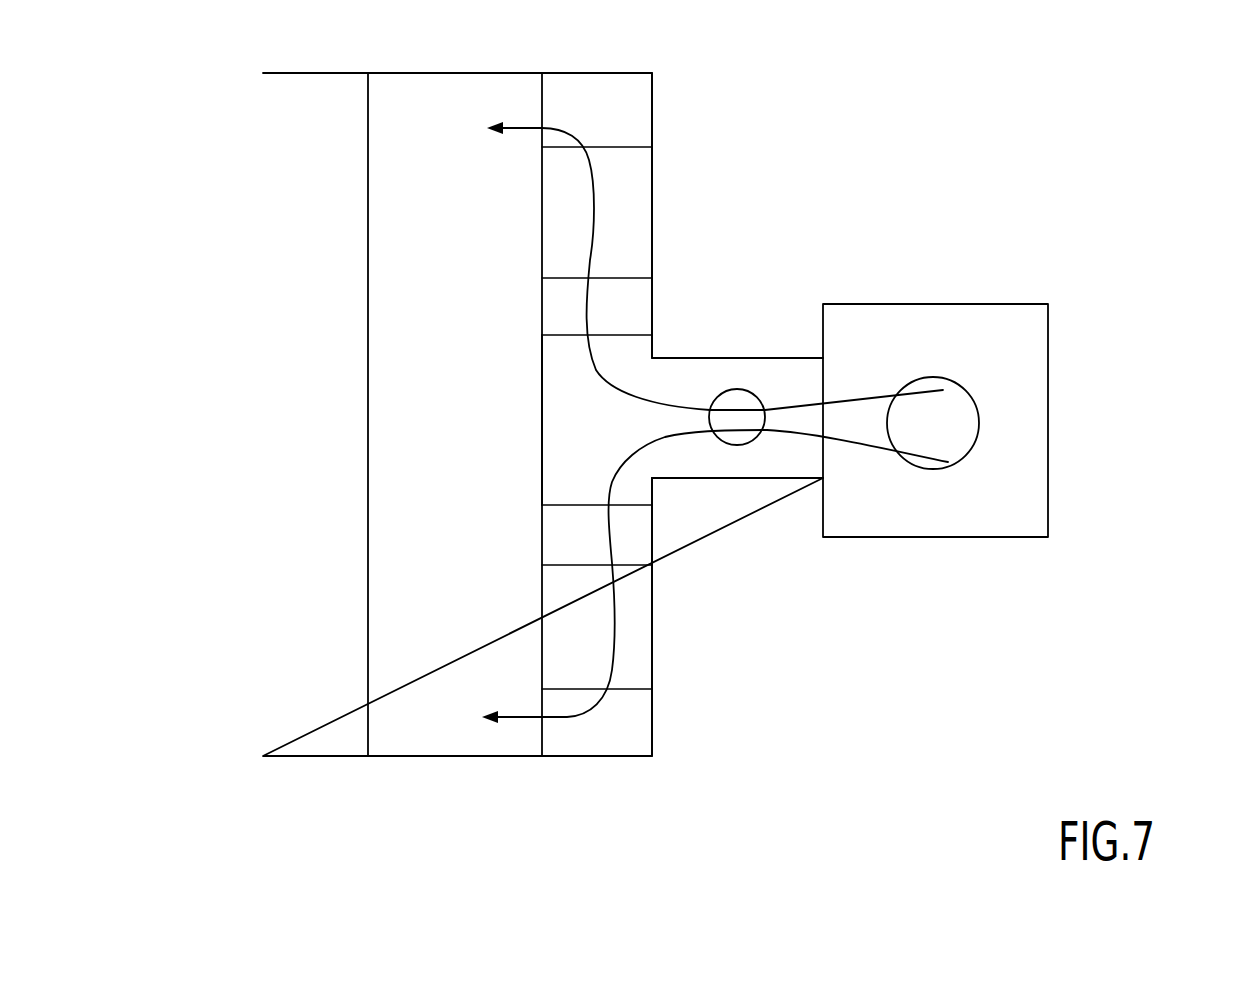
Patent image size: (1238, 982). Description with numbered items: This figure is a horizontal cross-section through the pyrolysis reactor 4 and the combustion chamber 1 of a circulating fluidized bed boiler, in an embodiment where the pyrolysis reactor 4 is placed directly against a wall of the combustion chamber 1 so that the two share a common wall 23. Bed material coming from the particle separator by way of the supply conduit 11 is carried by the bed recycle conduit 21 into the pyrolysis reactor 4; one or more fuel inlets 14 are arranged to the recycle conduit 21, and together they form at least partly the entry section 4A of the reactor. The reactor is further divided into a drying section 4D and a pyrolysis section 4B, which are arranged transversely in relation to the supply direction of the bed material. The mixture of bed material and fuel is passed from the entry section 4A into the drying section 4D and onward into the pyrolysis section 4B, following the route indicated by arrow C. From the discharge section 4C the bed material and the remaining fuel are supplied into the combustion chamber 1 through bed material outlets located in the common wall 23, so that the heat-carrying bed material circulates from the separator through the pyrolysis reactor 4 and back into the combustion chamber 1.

The combustion chamber 1 is at (440, 710).
The common wall 23 is at (537, 357).
The pyrolysis reactor 4 is at (563, 428).
The entry section 4A is at (660, 427).
The pyrolysis section 4B is at (635, 228).
The discharge section 4C is at (637, 97).
The drying section 4D is at (645, 307).
The route of the bed material C is at (638, 142).
The fuel inlet 14 is at (738, 392).
The recycle conduit 21 is at (738, 468).
The supply conduit 11 is at (967, 432).